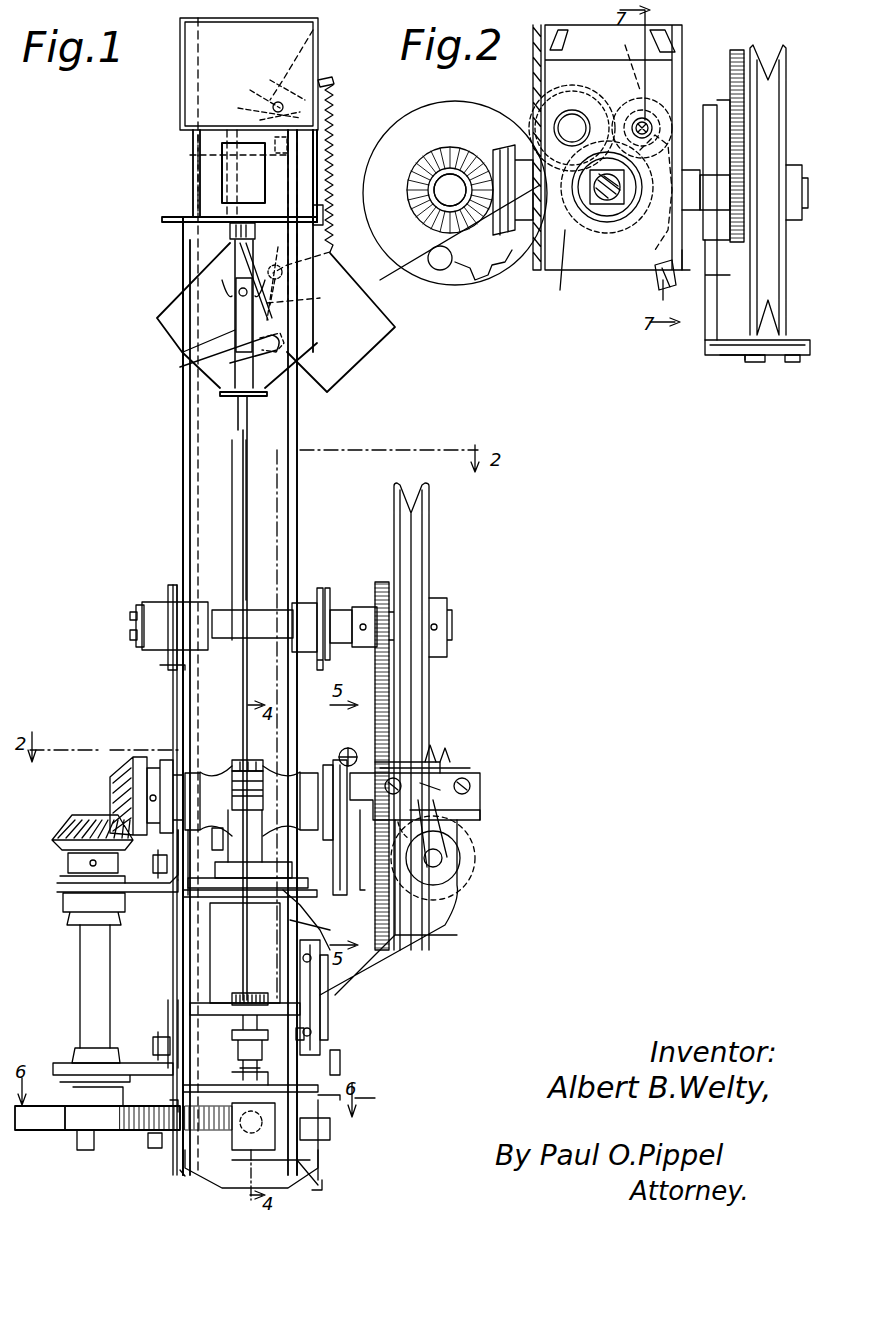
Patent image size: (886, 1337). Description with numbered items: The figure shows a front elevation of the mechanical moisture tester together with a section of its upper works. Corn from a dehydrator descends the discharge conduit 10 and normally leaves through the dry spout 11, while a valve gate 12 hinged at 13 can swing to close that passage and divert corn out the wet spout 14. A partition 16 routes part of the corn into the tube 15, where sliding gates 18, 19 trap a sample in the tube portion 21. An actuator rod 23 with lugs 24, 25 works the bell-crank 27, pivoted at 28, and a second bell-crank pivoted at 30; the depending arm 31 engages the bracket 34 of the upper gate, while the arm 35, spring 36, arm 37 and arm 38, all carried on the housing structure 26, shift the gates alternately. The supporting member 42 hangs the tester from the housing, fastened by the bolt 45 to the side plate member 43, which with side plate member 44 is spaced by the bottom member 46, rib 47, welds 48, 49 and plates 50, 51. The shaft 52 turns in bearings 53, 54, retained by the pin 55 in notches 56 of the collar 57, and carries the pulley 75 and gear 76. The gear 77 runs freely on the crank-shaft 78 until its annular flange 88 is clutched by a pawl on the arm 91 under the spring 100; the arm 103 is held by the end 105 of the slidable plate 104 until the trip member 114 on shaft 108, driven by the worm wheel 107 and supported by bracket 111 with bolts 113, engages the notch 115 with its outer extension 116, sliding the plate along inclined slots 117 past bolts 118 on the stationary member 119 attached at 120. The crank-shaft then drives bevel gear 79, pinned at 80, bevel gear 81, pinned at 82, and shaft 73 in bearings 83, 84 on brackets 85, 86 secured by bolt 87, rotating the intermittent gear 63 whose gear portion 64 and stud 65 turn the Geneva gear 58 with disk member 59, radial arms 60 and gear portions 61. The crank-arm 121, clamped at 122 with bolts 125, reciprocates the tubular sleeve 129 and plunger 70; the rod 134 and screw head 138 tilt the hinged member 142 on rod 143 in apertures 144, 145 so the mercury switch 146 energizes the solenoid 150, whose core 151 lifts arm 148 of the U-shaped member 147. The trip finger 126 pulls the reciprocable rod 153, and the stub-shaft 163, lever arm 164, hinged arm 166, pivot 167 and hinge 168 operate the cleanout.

In FIG. 1, the discharge conduit 10 is at (205, 62).
In FIG. 1, the discharge spout 11 is at (388, 338).
In FIG. 1, the valve gate 12 is at (300, 300).
In FIG. 1, the hinge 13 is at (285, 343).
In FIG. 1, the wet spout 14 is at (165, 318).
In FIG. 1, the tube 15 is at (212, 410).
In FIG. 2, the tube 15 is at (580, 112).
In FIG. 1, the partition 16 is at (316, 52).
In FIG. 1, the sliding gate 18 is at (162, 219).
In FIG. 1, the sliding gate 19 is at (200, 155).
In FIG. 1, the tube portion 21 is at (196, 192).
In FIG. 1, the actuator rod 23 is at (302, 418).
In FIG. 2, the actuator rod 23 is at (636, 122).
In FIG. 1, the lug 24 is at (325, 218).
In FIG. 1, the lug 25 is at (336, 112).
In FIG. 1, the housing structure 26 is at (305, 155).
In FIG. 1, the bell-crank 27 is at (275, 85).
In FIG. 1, the pivot 28 is at (256, 95).
In FIG. 1, the pivot 30 is at (278, 285).
In FIG. 1, the depending arm 31 is at (240, 108).
In FIG. 1, the bracket 34 is at (245, 172).
In FIG. 1, the arm 35 is at (330, 78).
In FIG. 1, the spring 36 is at (332, 172).
In FIG. 1, the arm 37 is at (332, 253).
In FIG. 1, the arm 38 is at (255, 232).
In FIG. 1, the supporting member 42 is at (187, 440).
In FIG. 1, the side plate member 43 is at (178, 700).
In FIG. 2, the side plate member 43 is at (533, 285).
In FIG. 1, the side plate member 44 is at (322, 598).
In FIG. 2, the side plate member 44 is at (680, 45).
In FIG. 1, the bolt 45 is at (154, 865).
In FIG. 1, the bottom member 46 is at (320, 1178).
In FIG. 1, the rib 47 is at (210, 1183).
In FIG. 1, the weld 48 is at (178, 1175).
In FIG. 1, the weld 49 is at (318, 1165).
In FIG. 1, the plate 50 is at (190, 900).
In FIG. 2, the plate 50 is at (580, 84).
In FIG. 1, the plate 51 is at (178, 1010).
In FIG. 1, the shaft 52 is at (258, 615).
In FIG. 1, the bearing 53 is at (158, 612).
In FIG. 1, the bearing 54 is at (305, 610).
In FIG. 2, the bearing 54 is at (685, 225).
In FIG. 1, the pin 55 is at (132, 615).
In FIG. 1, the notches 56 is at (132, 634).
In FIG. 1, the collar 57 is at (140, 608).
In FIG. 1, the Geneva gear 58 is at (318, 1128).
In FIG. 1, the disk member 59 is at (300, 1170).
In FIG. 1, the radial arms 60 is at (150, 1148).
In FIG. 2, the radial arms 60 is at (640, 55).
In FIG. 2, the gear portions 61 is at (578, 232).
In FIG. 1, the intermittent gear 63 is at (32, 1130).
In FIG. 2, the intermittent gear 63 is at (443, 110).
In FIG. 1, the gear portion 64 is at (122, 1130).
In FIG. 2, the gear portion 64 is at (475, 280).
In FIG. 1, the stud 65 is at (82, 1150).
In FIG. 2, the stud 65 is at (440, 270).
In FIG. 1, the plunger 70 is at (262, 1078).
In FIG. 1, the shaft 73 is at (82, 960).
In FIG. 2, the shaft 73 is at (445, 188).
In FIG. 1, the pulley 75 is at (422, 545).
In FIG. 2, the pulley 75 is at (775, 97).
In FIG. 1, the gear 76 is at (385, 582).
In FIG. 2, the gear 76 is at (742, 153).
In FIG. 1, the gear 77 is at (378, 676).
In FIG. 2, the gear 77 is at (736, 50).
In FIG. 1, the crank-shaft 78 is at (222, 775).
In FIG. 1, the bevel gear 79 is at (118, 772).
In FIG. 2, the bevel gear 79 is at (445, 233).
In FIG. 1, the pin 80 is at (153, 795).
In FIG. 1, the bevel gear 81 is at (68, 822).
In FIG. 2, the bevel gear 81 is at (428, 160).
In FIG. 1, the pin 82 is at (90, 863).
In FIG. 1, the bearing 83 is at (75, 1050).
In FIG. 1, the bearing 84 is at (70, 905).
In FIG. 1, the bracket 85 is at (58, 1067).
In FIG. 1, the bracket 86 is at (60, 885).
In FIG. 1, the bolt 87 is at (154, 1045).
In FIG. 1, the annular flange 88 is at (370, 888).
In FIG. 2, the annular flange 88 is at (710, 272).
In FIG. 1, the arm 91 is at (345, 752).
In FIG. 2, the arm 91 is at (705, 108).
In FIG. 1, the spring 100 is at (348, 748).
In FIG. 1, the arm 103 is at (356, 855).
In FIG. 2, the arm 103 is at (705, 335).
In FIG. 1, the slidable plate 104 is at (455, 762).
In FIG. 2, the slidable plate 104 is at (755, 362).
In FIG. 1, the end 105 is at (395, 762).
In FIG. 1, the worm wheel 107 is at (472, 868).
In FIG. 1, the shaft 108 is at (442, 858).
In FIG. 1, the supporting bracket 111 is at (455, 965).
In FIG. 1, the bolts 113 is at (342, 1060).
In FIG. 1, the trip member 114 is at (460, 828).
In FIG. 1, the notch 115 is at (450, 752).
In FIG. 1, the outer extension 116 is at (482, 808).
In FIG. 1, the inclined slots 117 is at (445, 778).
In FIG. 2, the inclined slots 117 is at (755, 362).
In FIG. 1, the bolts 118 is at (398, 778).
In FIG. 1, the stationary member 119 is at (482, 818).
In FIG. 2, the stationary member 119 is at (740, 360).
In FIG. 1, the attachment 120 is at (405, 832).
In FIG. 1, the crank-arm 121 is at (245, 855).
In FIG. 2, the crank-arm 121 is at (605, 225).
In FIG. 1, the clamp 122 is at (265, 780).
In FIG. 1, the bolts 125 is at (250, 760).
In FIG. 1, the trip finger 126 is at (250, 805).
In FIG. 1, the tubular sleeve 129 is at (262, 949).
In FIG. 2, the tubular sleeve 129 is at (571, 230).
In FIG. 1, the rod 134 is at (262, 1050).
In FIG. 1, the screw head 138 is at (262, 975).
In FIG. 1, the hinged member 142 is at (243, 1103).
In FIG. 1, the rod 143 is at (320, 1088).
In FIG. 1, the aperture 144 is at (172, 1100).
In FIG. 1, the aperture 145 is at (345, 1100).
In FIG. 1, the mercury switch 146 is at (253, 1151).
In FIG. 1, the U-shaped member 147 is at (282, 333).
In FIG. 1, the arm 148 is at (210, 360).
In FIG. 1, the solenoid 150 is at (224, 178).
In FIG. 1, the core 151 is at (238, 270).
In FIG. 1, the reciprocable rod 153 is at (247, 497).
In FIG. 1, the stub-shaft 163 is at (330, 952).
In FIG. 1, the lever arm 164 is at (322, 975).
In FIG. 2, the lever arm 164 is at (655, 280).
In FIG. 1, the hinged arm 166 is at (330, 1005).
In FIG. 2, the hinged arm 166 is at (660, 290).
In FIG. 1, the pivot 167 is at (332, 975).
In FIG. 1, the hinge 168 is at (310, 1032).